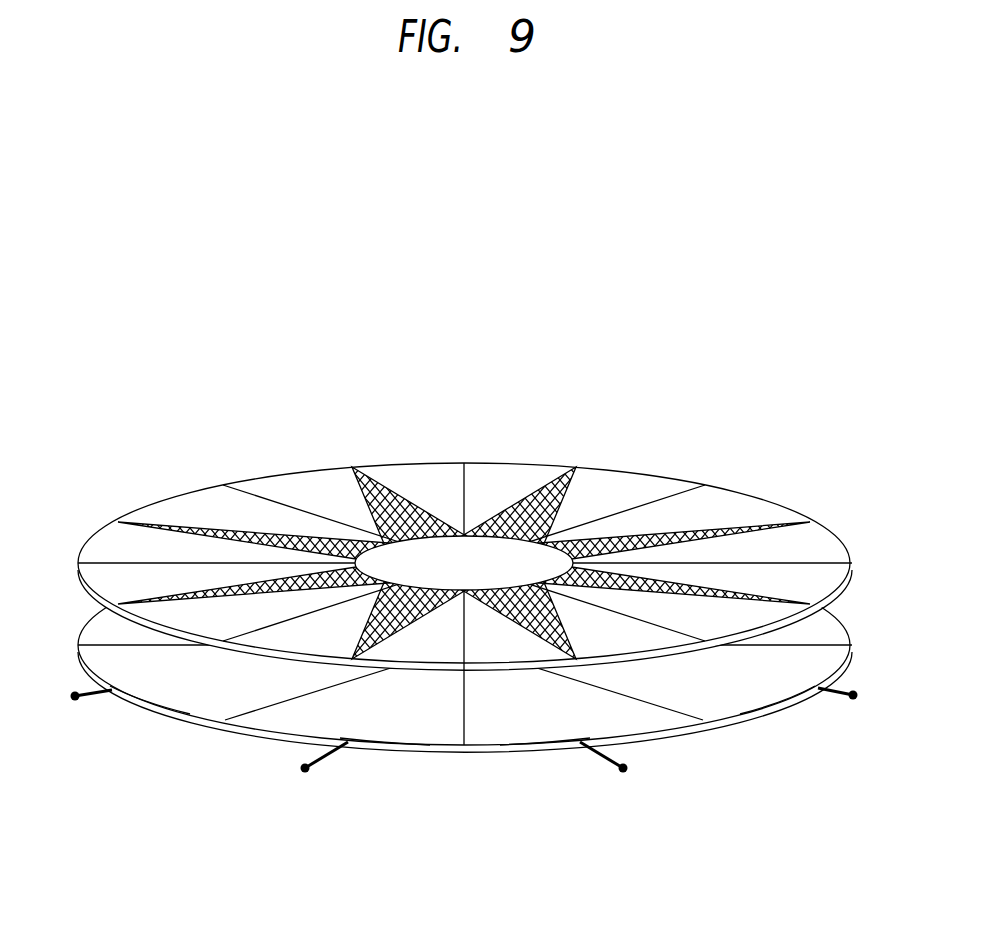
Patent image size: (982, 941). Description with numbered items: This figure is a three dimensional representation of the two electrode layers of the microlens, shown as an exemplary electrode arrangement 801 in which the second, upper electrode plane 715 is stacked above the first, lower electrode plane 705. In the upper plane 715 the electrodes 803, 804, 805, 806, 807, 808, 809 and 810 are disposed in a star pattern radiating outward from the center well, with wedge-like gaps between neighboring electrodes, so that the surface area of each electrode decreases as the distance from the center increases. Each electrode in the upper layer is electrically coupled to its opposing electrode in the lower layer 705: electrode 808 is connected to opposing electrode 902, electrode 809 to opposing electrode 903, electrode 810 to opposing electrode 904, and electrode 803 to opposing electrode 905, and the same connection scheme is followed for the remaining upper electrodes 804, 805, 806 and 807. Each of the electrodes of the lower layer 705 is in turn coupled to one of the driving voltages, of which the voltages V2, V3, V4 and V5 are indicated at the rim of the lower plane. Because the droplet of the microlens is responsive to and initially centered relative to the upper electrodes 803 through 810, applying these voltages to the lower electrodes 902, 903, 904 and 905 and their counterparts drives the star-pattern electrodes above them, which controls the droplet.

The rotor assembly 801 is at (472, 512).
The upper layer of electrodes 715 is at (840, 543).
The lower layer of electrodes 705 is at (708, 725).
The electrode 803 is at (746, 525).
The electrode 804 is at (778, 597).
The electrode 805 is at (540, 648).
The electrode 806 is at (385, 648).
The electrode 807 is at (148, 604).
The electrode 808 is at (183, 526).
The electrode 809 is at (381, 483).
The electrode 810 is at (549, 483).
The opposing electrode 902 is at (780, 695).
The opposing electrode 903 is at (542, 735).
The opposing electrode 904 is at (388, 735).
The opposing electrode 905 is at (148, 695).
The voltage V2 is at (860, 705).
The voltage V3 is at (620, 782).
The voltage V4 is at (313, 782).
The voltage V5 is at (77, 716).